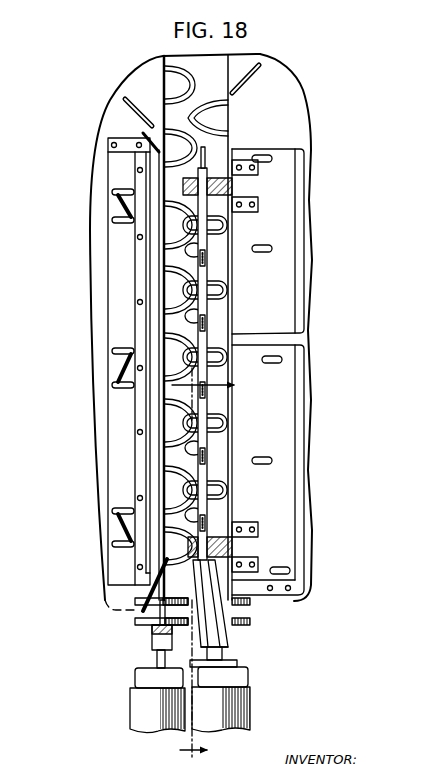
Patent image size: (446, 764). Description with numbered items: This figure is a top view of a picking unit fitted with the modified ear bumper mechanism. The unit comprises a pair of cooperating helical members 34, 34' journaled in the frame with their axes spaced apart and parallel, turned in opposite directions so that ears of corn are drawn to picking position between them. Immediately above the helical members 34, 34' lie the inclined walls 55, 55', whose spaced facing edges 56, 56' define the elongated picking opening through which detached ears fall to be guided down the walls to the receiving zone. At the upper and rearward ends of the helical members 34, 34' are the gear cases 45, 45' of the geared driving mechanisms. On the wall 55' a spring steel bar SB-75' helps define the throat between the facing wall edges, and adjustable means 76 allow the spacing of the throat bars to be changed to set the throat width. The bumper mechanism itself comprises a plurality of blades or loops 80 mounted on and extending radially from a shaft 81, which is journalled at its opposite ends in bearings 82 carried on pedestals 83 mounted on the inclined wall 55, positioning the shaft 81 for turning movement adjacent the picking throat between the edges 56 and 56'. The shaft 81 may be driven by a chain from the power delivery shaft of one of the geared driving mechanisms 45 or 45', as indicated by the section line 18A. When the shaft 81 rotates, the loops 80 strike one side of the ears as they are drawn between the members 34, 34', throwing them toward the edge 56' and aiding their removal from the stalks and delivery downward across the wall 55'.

The inclined wall 55 is at (291, 327).
The inclined wall 55' is at (175, 323).
The wall edge 56 is at (251, 327).
The wall edge 56' is at (148, 314).
The helical member 34 is at (190, 82).
The helical member 34' is at (197, 118).
The pedestal 83 is at (240, 160).
The bearing 82 is at (250, 184).
The adjustable means 76 is at (112, 208).
The spring steel bar SB-75' is at (95, 366).
The bumper blade or loop 80 is at (227, 224).
The shaft 81 is at (207, 304).
The section line of Fig. 18A is at (220, 566).
The gear case 45 is at (159, 653).
The gear case 45' is at (220, 657).